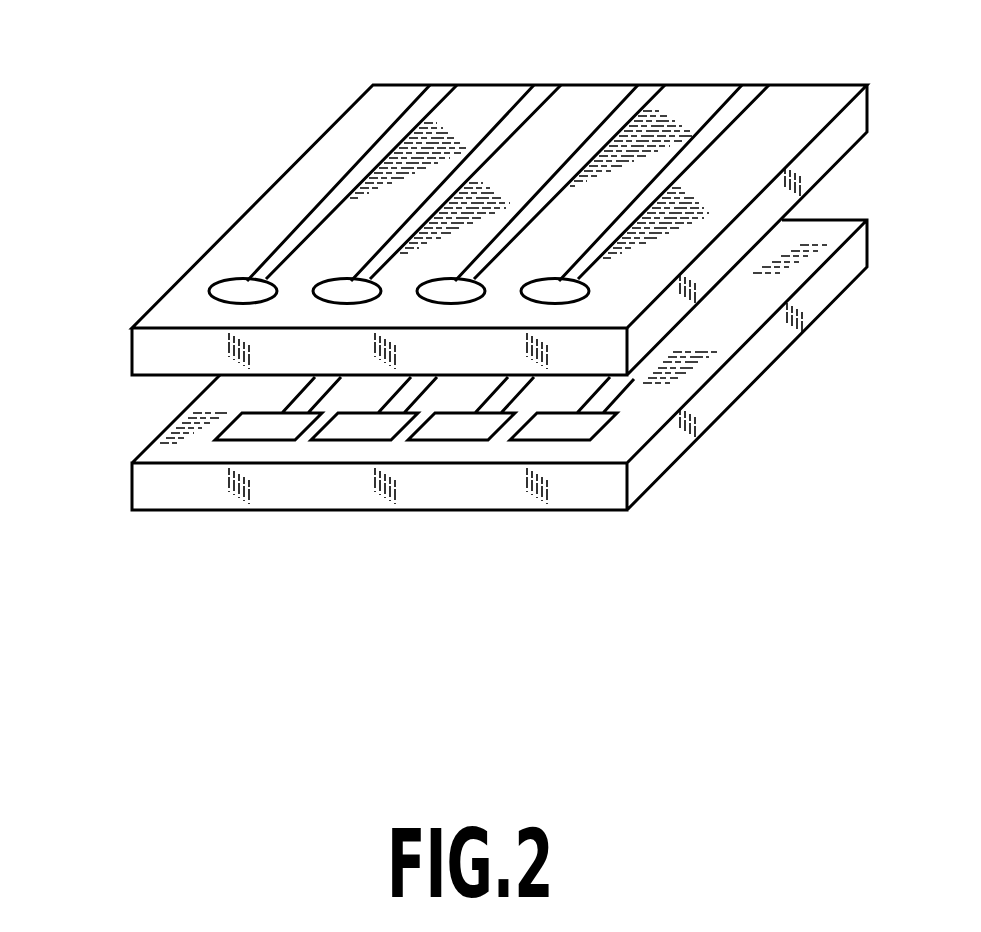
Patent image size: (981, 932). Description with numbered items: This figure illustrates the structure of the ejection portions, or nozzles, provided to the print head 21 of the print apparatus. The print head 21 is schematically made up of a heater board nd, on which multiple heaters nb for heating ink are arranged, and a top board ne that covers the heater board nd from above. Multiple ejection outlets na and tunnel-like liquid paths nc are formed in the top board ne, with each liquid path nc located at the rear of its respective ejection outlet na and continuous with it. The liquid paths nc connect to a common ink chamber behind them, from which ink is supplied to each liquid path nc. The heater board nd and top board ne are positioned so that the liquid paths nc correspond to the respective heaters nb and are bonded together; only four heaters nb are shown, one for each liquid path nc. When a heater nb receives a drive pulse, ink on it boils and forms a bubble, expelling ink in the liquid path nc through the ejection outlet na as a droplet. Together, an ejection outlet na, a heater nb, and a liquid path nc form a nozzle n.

The nozzle n is at (465, 234).
The ejection outlet na is at (240, 290).
The heater nb is at (270, 427).
The liquid path nc is at (298, 222).
The heater board nd is at (187, 490).
The top board ne is at (172, 352).
The print head 21 is at (222, 612).